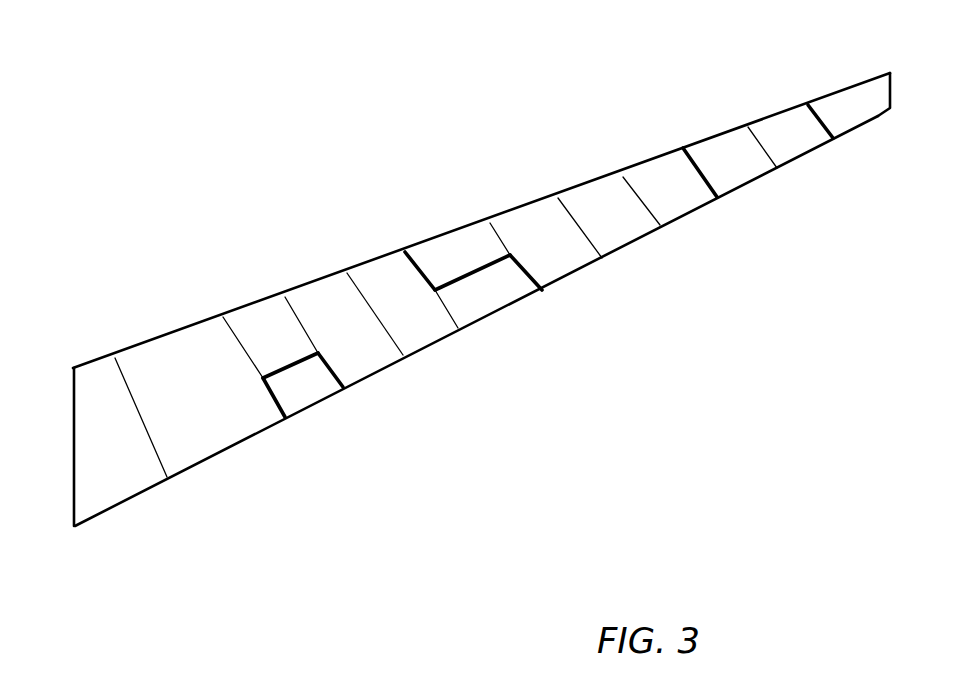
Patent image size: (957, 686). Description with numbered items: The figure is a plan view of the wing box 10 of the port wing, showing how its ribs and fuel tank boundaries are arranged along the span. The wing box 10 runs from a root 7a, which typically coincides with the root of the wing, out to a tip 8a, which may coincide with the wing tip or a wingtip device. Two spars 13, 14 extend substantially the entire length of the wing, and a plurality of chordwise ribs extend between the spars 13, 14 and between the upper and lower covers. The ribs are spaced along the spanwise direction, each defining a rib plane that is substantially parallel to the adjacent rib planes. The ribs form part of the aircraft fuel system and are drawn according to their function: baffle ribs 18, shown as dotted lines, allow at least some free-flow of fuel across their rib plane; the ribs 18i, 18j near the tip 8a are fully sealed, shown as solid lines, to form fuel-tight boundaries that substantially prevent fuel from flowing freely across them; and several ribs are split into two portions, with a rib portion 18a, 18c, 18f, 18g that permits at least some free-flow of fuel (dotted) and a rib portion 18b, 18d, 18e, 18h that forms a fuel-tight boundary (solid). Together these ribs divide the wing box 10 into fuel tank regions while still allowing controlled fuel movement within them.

The wing box 10 is at (212, 162).
The spar 13 is at (650, 235).
The spar 14 is at (477, 220).
The root of the wing box 7a is at (75, 453).
The tip of the wing box 8a is at (888, 103).
The baffle rib 18 is at (125, 375).
The rib portion 18a is at (235, 333).
The rib portion 18b is at (275, 408).
The rib portion 18c is at (298, 313).
The rib portion 18d is at (330, 378).
The rib portion 18e is at (420, 265).
The rib portion 18f is at (448, 310).
The rib portion 18g is at (502, 235).
The rib portion 18h is at (527, 268).
The sealed rib 18i is at (697, 162).
The sealed rib 18j is at (820, 112).